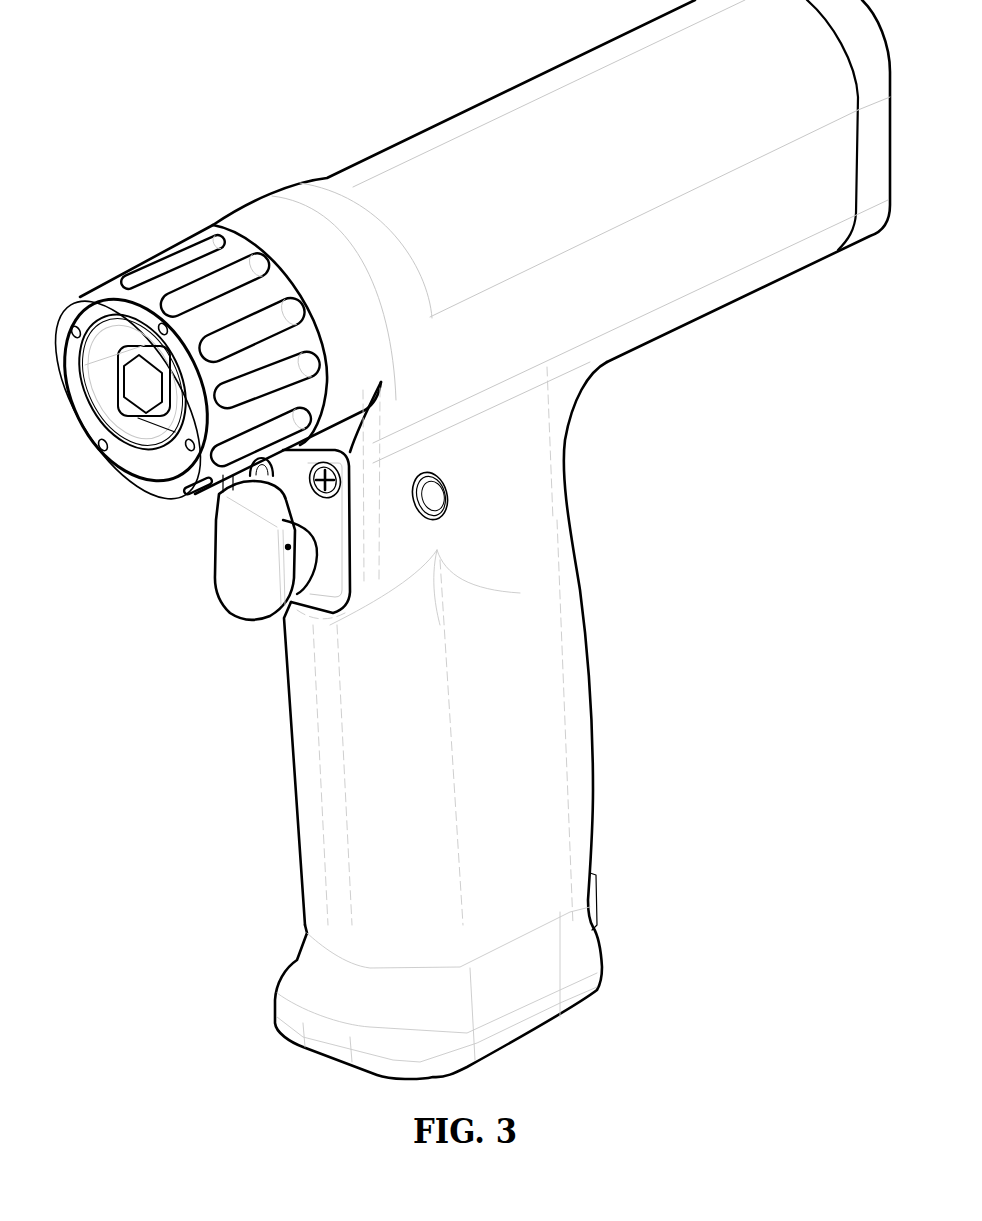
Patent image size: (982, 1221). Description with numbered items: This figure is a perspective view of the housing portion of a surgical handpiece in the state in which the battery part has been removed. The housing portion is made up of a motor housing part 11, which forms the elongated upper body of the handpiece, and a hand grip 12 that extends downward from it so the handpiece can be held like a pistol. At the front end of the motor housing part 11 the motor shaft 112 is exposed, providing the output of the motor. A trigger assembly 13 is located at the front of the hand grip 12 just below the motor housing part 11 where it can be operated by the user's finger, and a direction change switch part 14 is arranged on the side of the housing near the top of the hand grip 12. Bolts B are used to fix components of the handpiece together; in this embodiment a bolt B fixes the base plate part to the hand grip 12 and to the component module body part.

The motor housing part 11 is at (426, 116).
The motor shaft 112 is at (142, 408).
The hand grip 12 is at (606, 698).
The trigger assembly 13 is at (237, 631).
The direction change switch part 14 is at (447, 496).
The bolt B is at (318, 497).